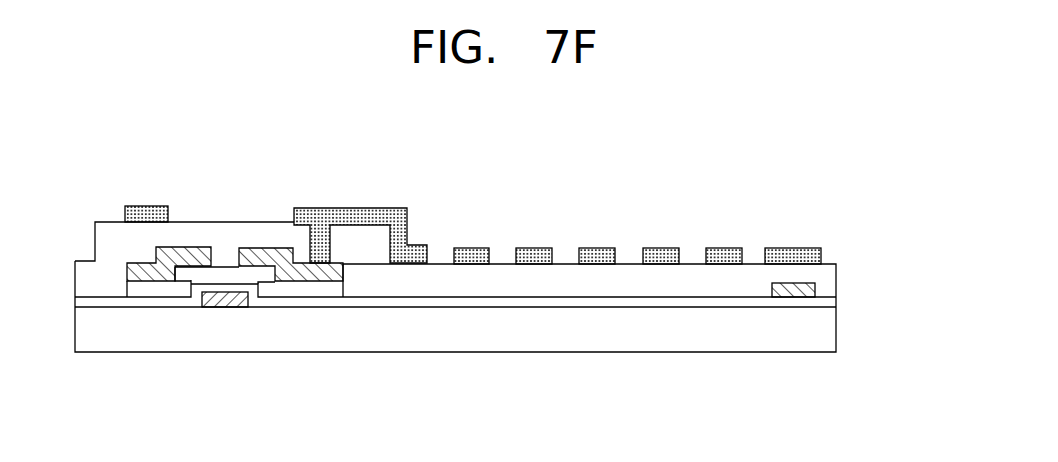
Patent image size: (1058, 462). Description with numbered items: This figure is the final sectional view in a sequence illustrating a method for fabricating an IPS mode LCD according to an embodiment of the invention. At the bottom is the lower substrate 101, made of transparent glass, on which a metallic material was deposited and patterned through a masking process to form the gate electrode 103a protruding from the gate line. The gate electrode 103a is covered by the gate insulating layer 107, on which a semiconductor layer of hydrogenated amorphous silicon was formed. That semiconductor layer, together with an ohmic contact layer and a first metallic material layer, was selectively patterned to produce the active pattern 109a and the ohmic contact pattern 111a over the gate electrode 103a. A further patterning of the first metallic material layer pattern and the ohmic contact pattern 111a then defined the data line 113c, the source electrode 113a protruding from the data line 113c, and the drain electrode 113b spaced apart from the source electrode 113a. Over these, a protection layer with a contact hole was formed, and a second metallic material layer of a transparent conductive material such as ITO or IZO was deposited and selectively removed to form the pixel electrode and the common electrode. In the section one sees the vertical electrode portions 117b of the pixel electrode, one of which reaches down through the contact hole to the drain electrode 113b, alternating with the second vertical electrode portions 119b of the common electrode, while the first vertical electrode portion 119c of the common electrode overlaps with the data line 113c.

The lower substrate 101 is at (832, 333).
The gate insulating layer 107 is at (832, 303).
The gate electrode 103a is at (228, 307).
The active pattern 109a is at (174, 290).
The ohmic contact pattern 111a is at (289, 284).
The source electrode 113a is at (195, 247).
The drain electrode 113b is at (262, 248).
The data line 113c is at (791, 298).
The vertical electrode portion of the pixel electrode 117b is at (364, 208).
The second vertical electrode portion of the common electrode 119b is at (473, 248).
The first vertical electrode portion of the common electrode 119c is at (147, 206).